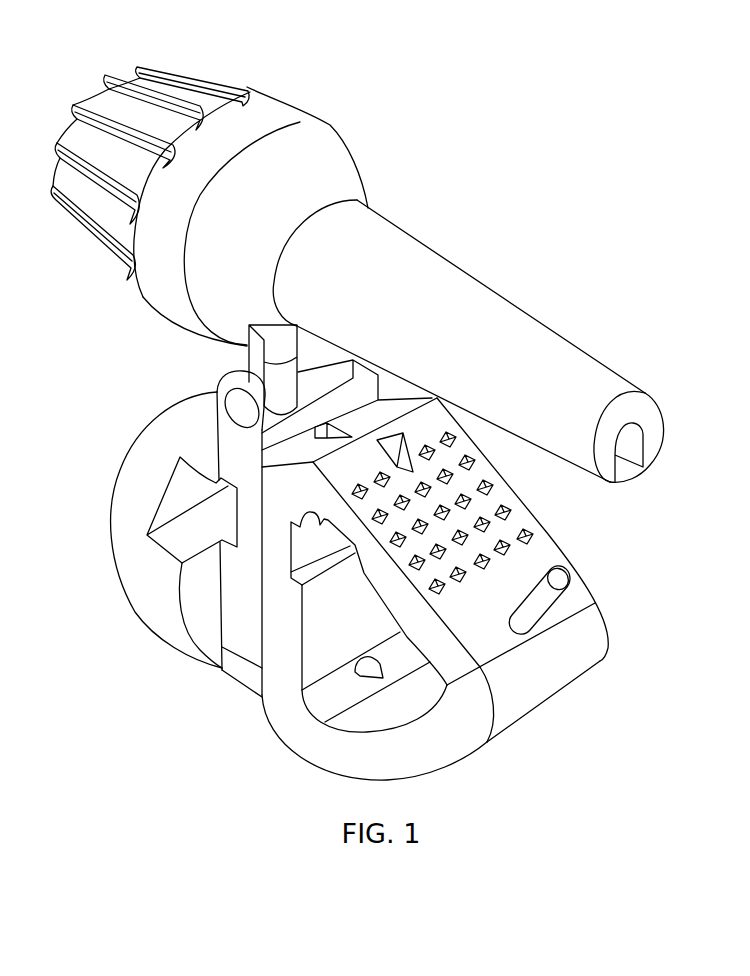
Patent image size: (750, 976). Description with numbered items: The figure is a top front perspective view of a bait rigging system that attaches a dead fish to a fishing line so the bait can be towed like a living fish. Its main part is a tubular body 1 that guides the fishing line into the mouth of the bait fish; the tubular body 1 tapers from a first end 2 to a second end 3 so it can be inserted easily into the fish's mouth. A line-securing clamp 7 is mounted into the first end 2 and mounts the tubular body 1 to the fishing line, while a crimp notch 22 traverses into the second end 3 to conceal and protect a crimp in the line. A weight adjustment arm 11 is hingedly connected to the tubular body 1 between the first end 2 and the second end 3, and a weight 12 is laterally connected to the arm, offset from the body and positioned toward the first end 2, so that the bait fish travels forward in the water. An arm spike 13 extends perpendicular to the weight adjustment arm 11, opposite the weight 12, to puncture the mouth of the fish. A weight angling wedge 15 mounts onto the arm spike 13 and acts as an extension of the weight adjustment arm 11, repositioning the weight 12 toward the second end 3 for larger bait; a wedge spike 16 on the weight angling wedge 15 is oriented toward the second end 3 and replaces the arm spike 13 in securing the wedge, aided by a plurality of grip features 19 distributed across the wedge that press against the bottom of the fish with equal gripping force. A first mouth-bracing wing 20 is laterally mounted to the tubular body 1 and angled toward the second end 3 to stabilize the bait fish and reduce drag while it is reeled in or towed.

The tubular body 1 is at (490, 298).
The first end 2 is at (141, 289).
The second end 3 is at (660, 422).
The line-securing clamp 7 is at (205, 88).
The weight adjustment arm 11 is at (236, 672).
The weight 12 is at (122, 527).
The arm spike 13 is at (375, 677).
The weight angling wedge 15 is at (543, 700).
The wedge spike 16 is at (388, 458).
The grip features 19 is at (457, 440).
The first mouth-bracing wing 20 is at (287, 334).
The crimp notch 22 is at (622, 474).